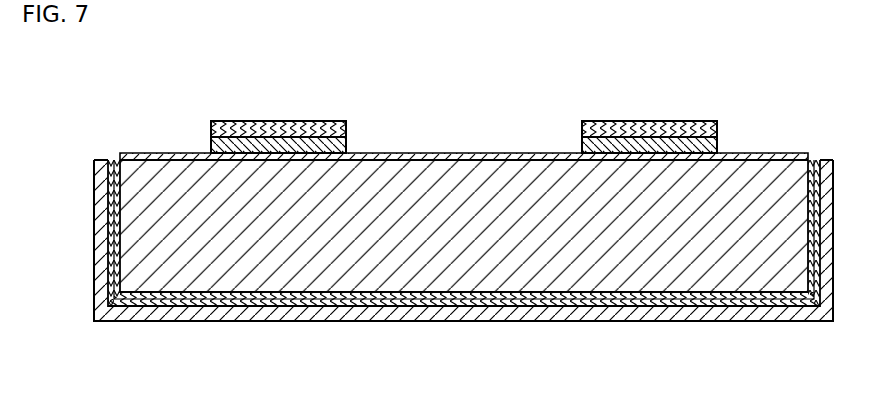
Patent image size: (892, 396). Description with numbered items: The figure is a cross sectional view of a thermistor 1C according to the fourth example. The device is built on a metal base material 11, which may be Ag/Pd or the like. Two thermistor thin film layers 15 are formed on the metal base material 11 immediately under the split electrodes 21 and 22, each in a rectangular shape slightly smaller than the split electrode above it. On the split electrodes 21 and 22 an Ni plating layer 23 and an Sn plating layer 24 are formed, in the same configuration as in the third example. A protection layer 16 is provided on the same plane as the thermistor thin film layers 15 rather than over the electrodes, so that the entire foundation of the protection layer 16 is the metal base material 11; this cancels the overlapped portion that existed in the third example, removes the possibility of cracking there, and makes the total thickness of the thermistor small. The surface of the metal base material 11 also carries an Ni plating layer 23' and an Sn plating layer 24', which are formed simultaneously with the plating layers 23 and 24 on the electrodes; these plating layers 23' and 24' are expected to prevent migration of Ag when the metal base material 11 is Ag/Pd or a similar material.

The thermistor 1C is at (200, 70).
The metal base material 11 is at (563, 280).
The thermistor thin film layer 15 is at (278, 160).
The protection layer 16 is at (440, 152).
The split electrode 21 is at (348, 143).
The split electrode 22 is at (717, 145).
The Ni plating layer 23 is at (464, 117).
The Sn plating layer 24 is at (464, 104).
The Ni plating layer 23' is at (464, 265).
The Sn plating layer 24' is at (464, 265).